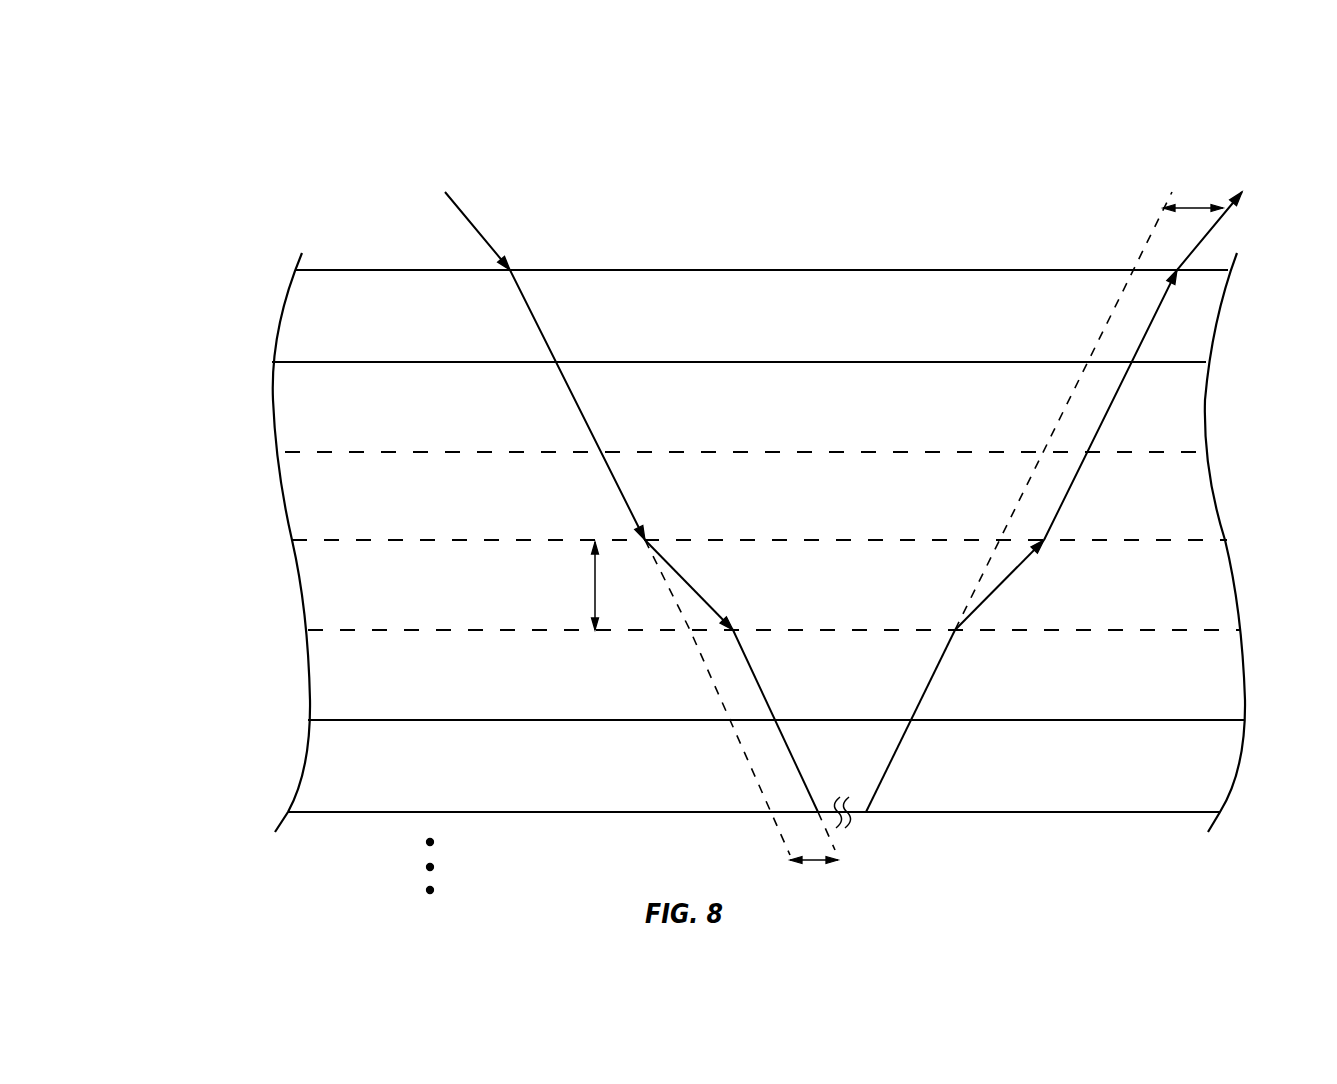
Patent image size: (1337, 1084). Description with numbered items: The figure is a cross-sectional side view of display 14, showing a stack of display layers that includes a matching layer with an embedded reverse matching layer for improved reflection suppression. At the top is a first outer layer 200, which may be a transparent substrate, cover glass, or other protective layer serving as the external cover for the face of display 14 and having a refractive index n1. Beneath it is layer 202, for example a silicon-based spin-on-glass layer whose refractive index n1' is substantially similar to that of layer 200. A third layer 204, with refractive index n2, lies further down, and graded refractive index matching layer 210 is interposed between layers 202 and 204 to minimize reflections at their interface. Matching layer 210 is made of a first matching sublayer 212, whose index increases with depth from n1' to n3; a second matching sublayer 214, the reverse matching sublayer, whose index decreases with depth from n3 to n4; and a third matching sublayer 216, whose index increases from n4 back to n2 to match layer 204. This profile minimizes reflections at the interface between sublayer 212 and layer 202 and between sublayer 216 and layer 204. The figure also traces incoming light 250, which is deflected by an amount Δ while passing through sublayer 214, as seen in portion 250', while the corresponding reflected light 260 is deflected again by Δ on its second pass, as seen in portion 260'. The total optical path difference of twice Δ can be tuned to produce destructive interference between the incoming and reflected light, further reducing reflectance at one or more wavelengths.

The display 14 is at (345, 122).
The layer 200 is at (280, 322).
The layer 202 is at (280, 398).
The layer 204 is at (305, 765).
The graded refractive index matching layer 210 is at (258, 448).
The first matching sublayer 212 is at (1249, 452).
The second matching sublayer 214 is at (1249, 542).
The third matching sublayer 216 is at (1249, 632).
The incoming light 250 is at (641, 538).
The portion of incoming light 250' is at (711, 585).
The reflected light 260 is at (1054, 498).
The portion of reflected light 260' is at (1013, 585).